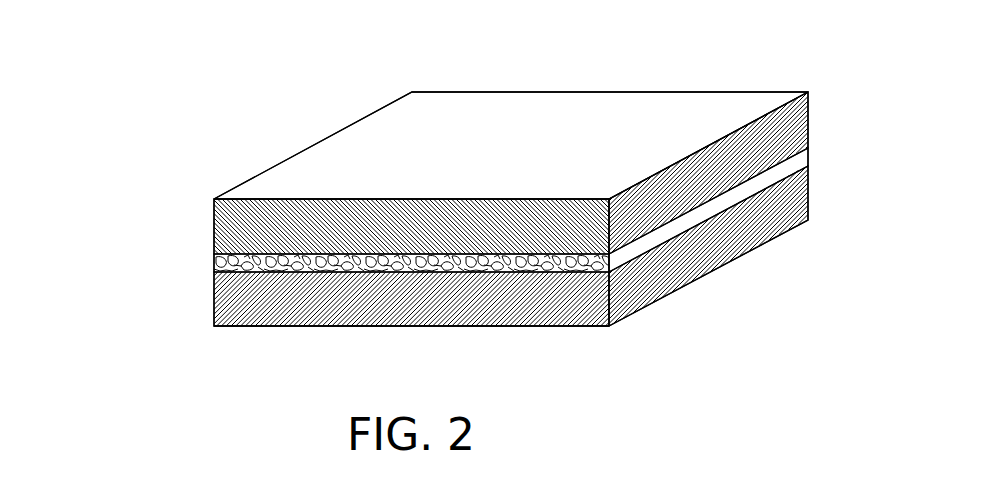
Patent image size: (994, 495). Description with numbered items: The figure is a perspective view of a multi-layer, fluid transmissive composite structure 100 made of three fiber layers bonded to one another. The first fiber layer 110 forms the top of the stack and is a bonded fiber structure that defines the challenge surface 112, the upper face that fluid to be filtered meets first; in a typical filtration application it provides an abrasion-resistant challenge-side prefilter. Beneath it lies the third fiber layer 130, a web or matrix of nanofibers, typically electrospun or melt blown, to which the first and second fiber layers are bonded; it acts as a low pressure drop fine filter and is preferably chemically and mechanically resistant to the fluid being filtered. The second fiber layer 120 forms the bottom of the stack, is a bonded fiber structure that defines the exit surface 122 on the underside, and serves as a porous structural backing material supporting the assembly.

The multi-layer composite structure 100 is at (338, 80).
The first fiber layer 110 is at (208, 225).
The challenge surface 112 is at (608, 110).
The second fiber layer 120 is at (207, 299).
The exit surface 122 is at (516, 340).
The third fiber layer 130 is at (208, 265).